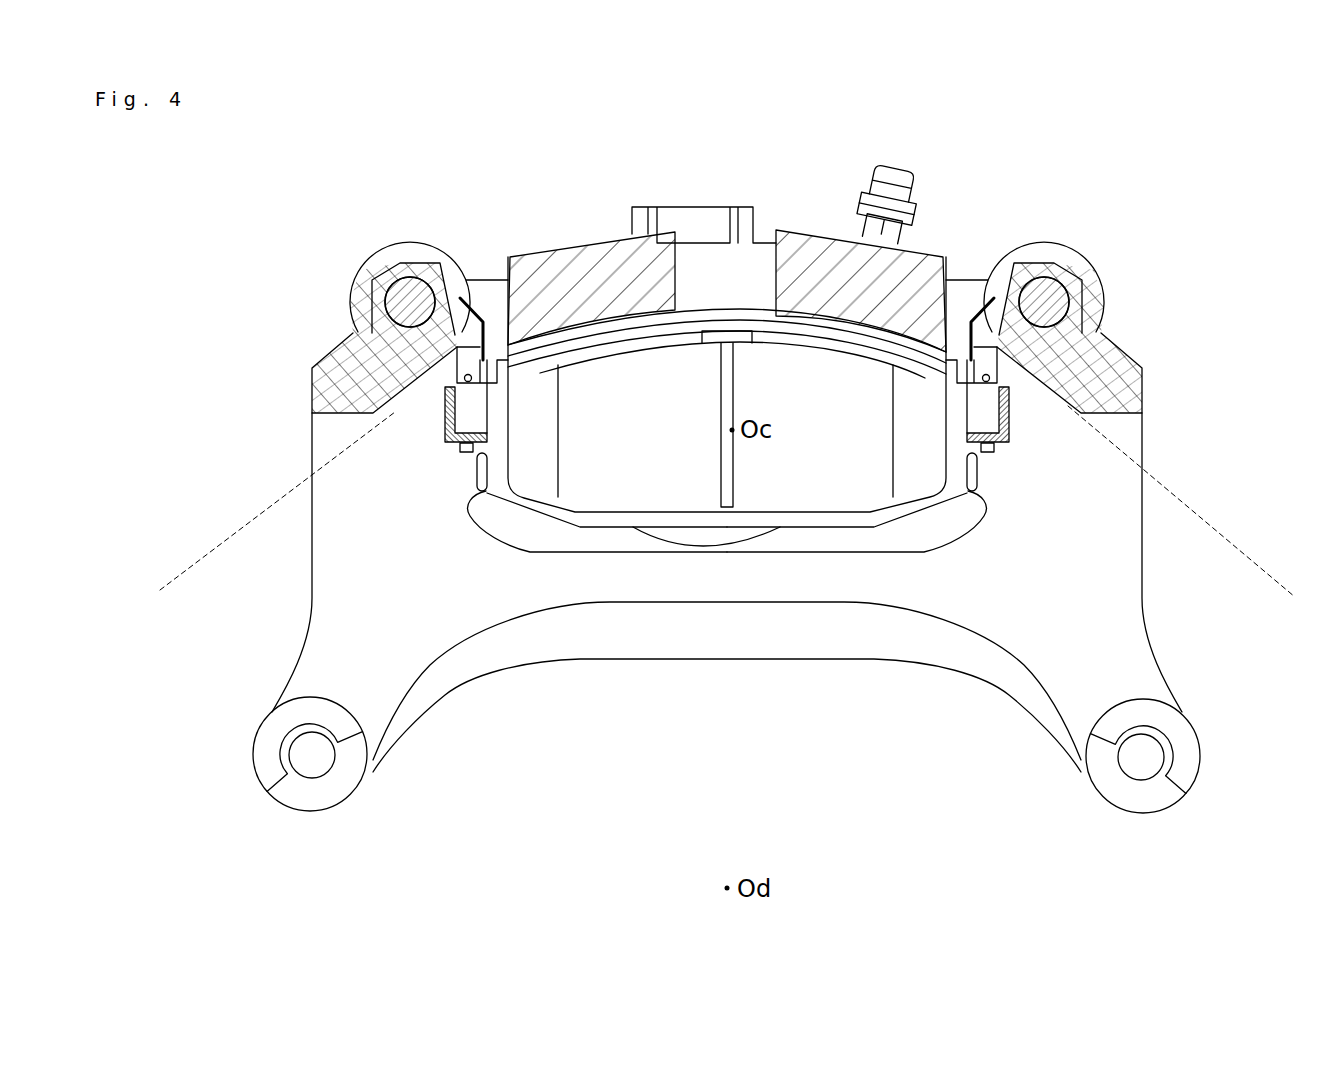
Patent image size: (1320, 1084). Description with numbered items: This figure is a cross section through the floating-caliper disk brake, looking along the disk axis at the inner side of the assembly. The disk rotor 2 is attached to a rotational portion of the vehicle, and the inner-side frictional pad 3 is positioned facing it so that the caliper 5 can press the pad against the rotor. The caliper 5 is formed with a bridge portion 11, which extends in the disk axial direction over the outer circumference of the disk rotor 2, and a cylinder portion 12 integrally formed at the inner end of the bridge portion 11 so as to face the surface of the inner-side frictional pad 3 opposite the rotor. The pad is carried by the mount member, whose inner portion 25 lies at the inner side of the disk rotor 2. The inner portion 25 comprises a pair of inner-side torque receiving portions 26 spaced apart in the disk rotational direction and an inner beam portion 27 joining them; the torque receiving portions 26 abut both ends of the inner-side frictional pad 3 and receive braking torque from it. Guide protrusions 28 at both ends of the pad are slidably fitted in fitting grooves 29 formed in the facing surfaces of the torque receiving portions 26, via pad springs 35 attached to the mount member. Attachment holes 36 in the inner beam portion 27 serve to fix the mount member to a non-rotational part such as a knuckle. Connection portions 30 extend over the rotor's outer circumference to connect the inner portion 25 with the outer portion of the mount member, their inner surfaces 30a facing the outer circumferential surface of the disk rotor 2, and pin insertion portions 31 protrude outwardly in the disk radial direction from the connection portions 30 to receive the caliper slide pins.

The disk rotor 2 is at (1222, 513).
The inner-side frictional pad 3 is at (880, 433).
The caliper 5 is at (546, 244).
The bridge portion 11 is at (592, 260).
The cylinder portion 12 is at (767, 545).
The inner portion 25 is at (716, 692).
The inner-side torque receiving portion 26 is at (363, 442).
The inner beam portion 27 is at (845, 638).
The guide protrusion 28 is at (455, 338).
The fitting groove 29 is at (445, 405).
The connection portion 30 is at (993, 340).
The inner surface 30a is at (477, 403).
The pin insertion portion 31 is at (375, 280).
The pad spring 35 is at (522, 527).
The attachment hole 36 is at (322, 762).